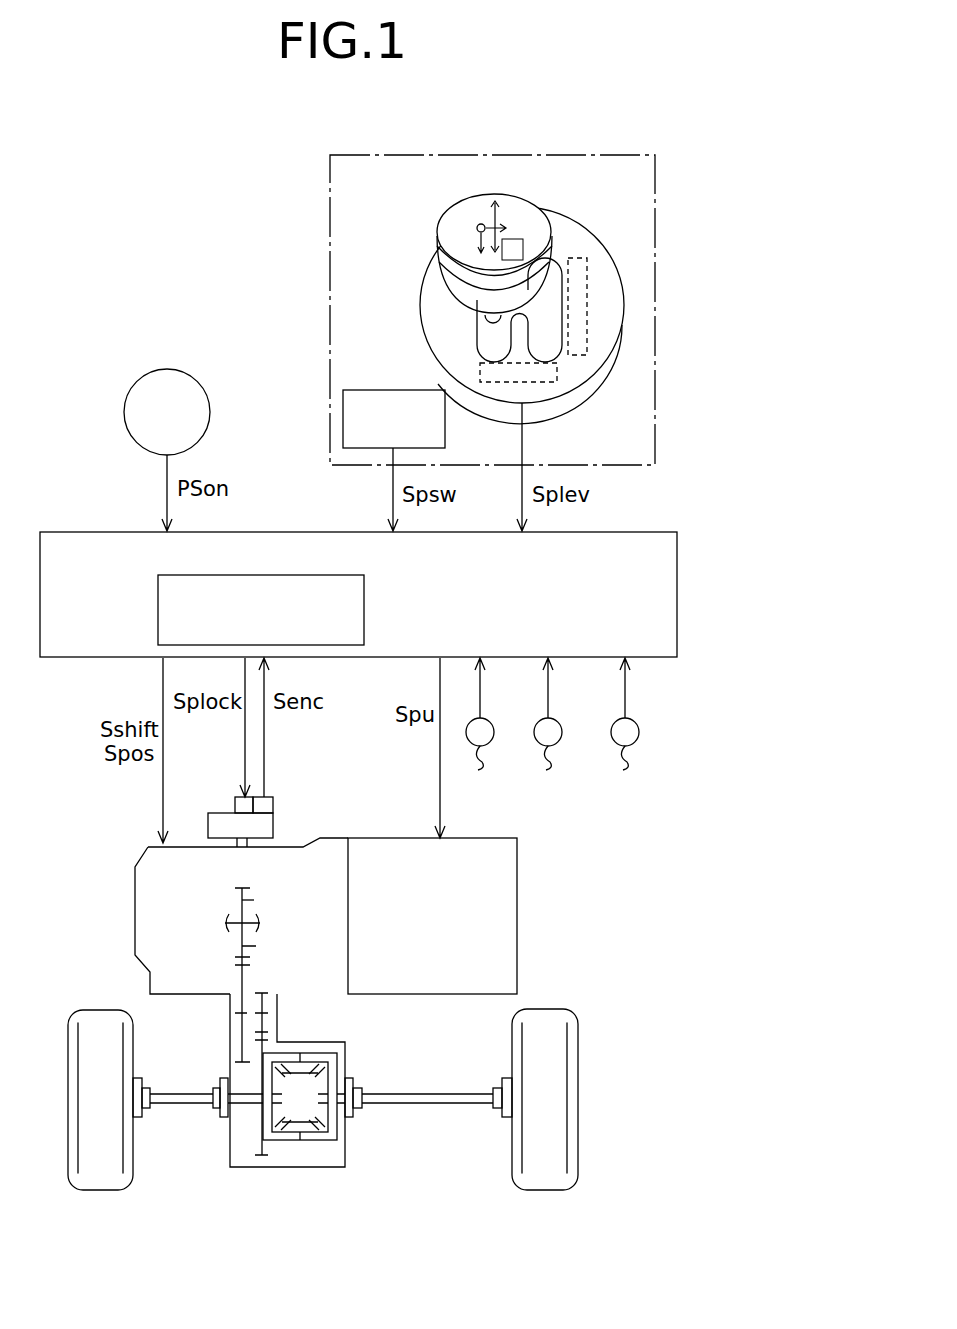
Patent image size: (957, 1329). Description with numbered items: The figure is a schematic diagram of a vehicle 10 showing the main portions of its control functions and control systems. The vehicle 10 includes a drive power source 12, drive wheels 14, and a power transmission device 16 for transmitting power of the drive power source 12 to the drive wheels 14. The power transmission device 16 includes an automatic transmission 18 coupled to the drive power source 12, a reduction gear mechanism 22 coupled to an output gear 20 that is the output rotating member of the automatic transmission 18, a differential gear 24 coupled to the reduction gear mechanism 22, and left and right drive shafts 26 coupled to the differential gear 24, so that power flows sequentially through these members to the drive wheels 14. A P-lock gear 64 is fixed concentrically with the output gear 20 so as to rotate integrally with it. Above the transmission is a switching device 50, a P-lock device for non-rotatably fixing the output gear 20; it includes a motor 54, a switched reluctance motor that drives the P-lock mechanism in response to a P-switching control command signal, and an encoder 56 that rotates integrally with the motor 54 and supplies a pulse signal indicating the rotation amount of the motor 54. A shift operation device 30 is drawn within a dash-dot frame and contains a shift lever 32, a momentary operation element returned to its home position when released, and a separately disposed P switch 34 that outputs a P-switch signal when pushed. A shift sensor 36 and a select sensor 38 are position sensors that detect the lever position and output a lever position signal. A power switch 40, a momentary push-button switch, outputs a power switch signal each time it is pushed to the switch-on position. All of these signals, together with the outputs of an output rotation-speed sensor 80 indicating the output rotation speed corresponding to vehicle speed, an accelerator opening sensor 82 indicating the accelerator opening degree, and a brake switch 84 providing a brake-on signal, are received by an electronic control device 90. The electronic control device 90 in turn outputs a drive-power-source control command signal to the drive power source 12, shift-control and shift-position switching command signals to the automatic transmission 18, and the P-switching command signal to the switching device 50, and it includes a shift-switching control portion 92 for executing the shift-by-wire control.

The vehicle 10 is at (578, 118).
The shift operation device 30 is at (462, 153).
The shift lever 32 is at (483, 198).
The P switch 34 is at (352, 400).
The shift sensor 36 is at (586, 357).
The select sensor 38 is at (540, 382).
The power switch 40 is at (190, 386).
The electronic control device 90 is at (615, 540).
The shift-switching control portion 92 is at (314, 583).
The output rotation-speed sensor 80 is at (491, 727).
The accelerator opening sensor 82 is at (569, 727).
The brake switch 84 is at (642, 727).
The power transmission device 16 is at (330, 780).
The automatic transmission 18 is at (148, 870).
The drive power source 12 is at (490, 848).
The switching device 50 is at (217, 793).
The motor 54 is at (237, 798).
The encoder 56 is at (268, 805).
The output gear 20 is at (236, 888).
The P-lock gear 64 is at (254, 898).
The reduction gear mechanism 22 is at (272, 970).
The differential gear 24 is at (330, 1162).
The drive shafts 26 is at (170, 1104).
The drive wheels 14 is at (103, 1016).